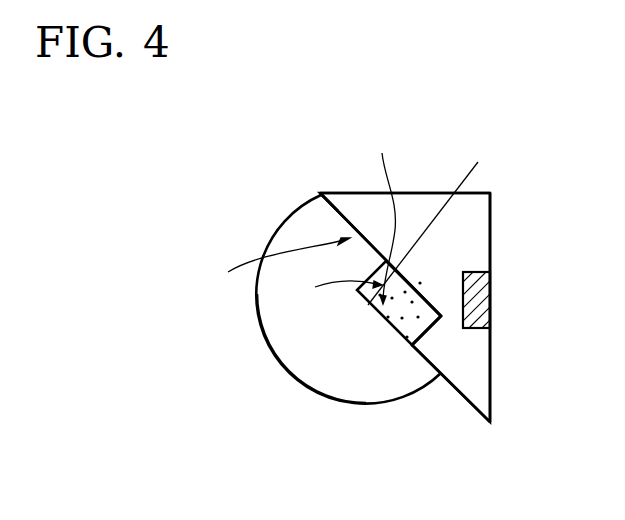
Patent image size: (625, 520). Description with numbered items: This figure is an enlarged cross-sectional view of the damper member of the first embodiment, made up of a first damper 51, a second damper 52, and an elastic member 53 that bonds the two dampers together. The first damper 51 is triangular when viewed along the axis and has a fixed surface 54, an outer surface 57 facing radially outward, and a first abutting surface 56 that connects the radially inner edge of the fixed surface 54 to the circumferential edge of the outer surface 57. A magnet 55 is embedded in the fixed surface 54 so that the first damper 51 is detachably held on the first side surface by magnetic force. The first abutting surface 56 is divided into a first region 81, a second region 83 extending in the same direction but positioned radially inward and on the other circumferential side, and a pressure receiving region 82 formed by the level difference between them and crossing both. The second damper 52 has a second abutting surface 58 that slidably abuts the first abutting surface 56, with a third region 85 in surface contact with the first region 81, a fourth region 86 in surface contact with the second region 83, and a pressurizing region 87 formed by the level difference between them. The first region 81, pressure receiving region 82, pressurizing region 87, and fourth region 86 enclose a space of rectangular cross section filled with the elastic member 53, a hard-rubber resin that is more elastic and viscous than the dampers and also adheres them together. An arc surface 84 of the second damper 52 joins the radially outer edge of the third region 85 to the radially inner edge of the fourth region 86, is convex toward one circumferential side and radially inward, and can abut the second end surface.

The first damper 51 is at (478, 212).
The second damper 52 is at (266, 314).
The elastic member 53 is at (405, 287).
The fixed surface 54 is at (493, 382).
The magnet 55 is at (482, 298).
The first abutting surface 56 is at (272, 264).
The outer surface 57 is at (432, 192).
The second abutting surface 58 is at (431, 220).
The first region 81 is at (348, 222).
The pressure receiving region 82 is at (410, 322).
The second region 83 is at (470, 406).
The arc surface 84 is at (285, 373).
The third region 85 is at (338, 210).
The fourth region 86 is at (384, 216).
The pressurizing region 87 is at (331, 293).